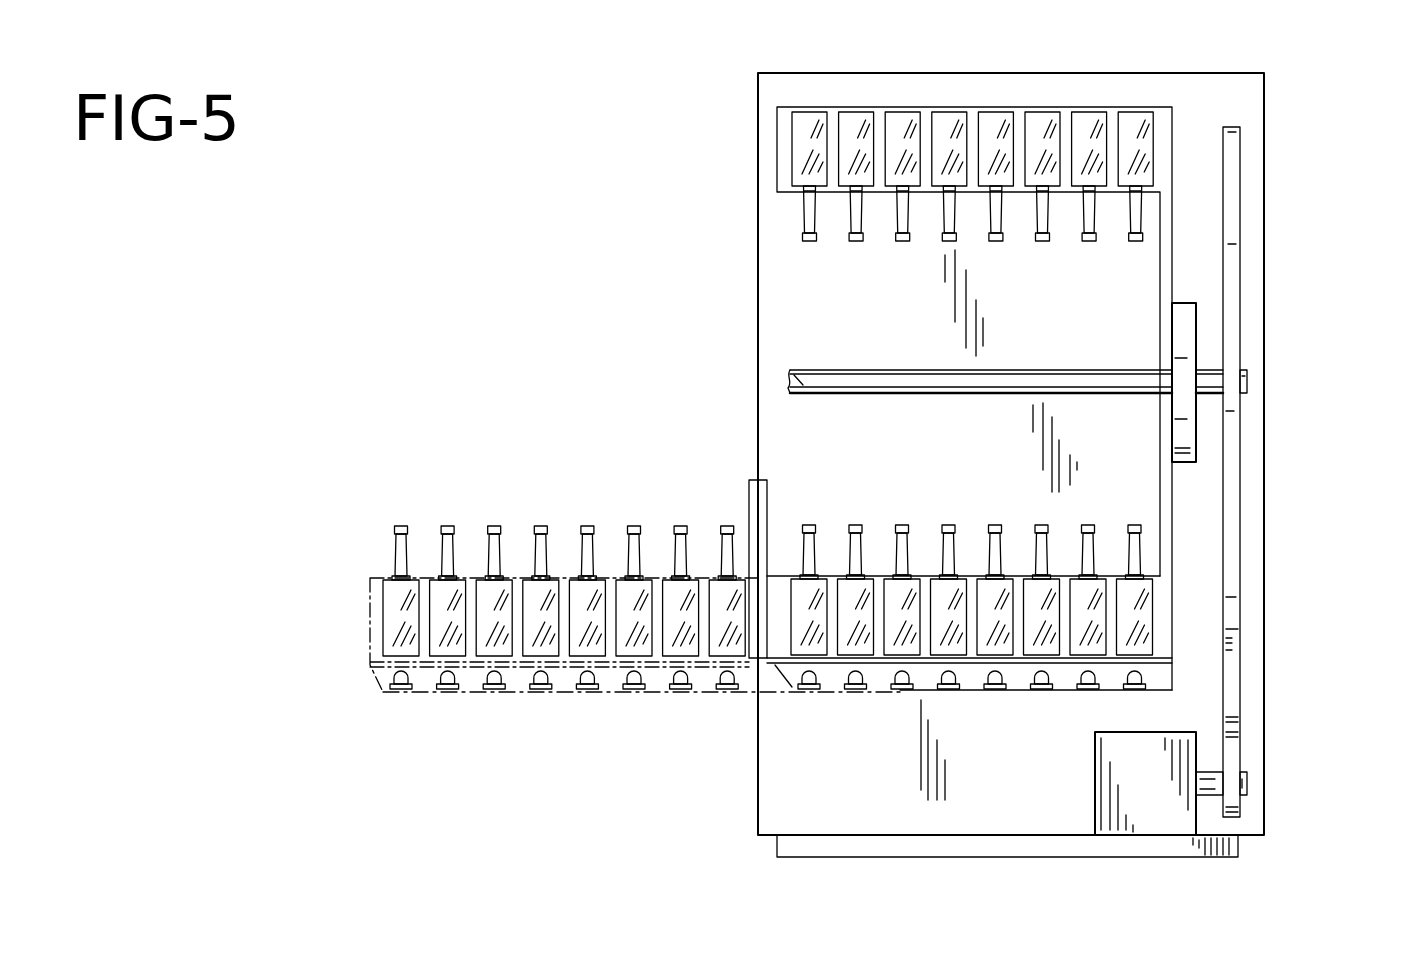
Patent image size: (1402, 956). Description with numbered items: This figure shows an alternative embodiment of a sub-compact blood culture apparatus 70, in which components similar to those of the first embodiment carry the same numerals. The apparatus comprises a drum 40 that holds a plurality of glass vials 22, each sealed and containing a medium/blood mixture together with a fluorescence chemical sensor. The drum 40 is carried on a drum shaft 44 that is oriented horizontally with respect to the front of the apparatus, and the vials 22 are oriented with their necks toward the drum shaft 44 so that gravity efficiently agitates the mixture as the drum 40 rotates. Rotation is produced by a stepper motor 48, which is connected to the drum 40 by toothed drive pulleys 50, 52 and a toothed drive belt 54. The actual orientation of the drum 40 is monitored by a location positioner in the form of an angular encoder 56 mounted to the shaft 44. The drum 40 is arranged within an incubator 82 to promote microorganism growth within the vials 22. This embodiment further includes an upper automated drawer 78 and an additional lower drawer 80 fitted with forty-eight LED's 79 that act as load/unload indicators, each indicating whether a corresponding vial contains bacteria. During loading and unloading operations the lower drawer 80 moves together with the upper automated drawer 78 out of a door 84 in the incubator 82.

The blood culture apparatus 70 is at (745, 96).
The drum 40 is at (1174, 203).
The incubator 82 is at (795, 285).
The glass vial 22 is at (1140, 602).
The drum shaft 44 is at (797, 372).
The door 84 is at (748, 490).
The upper automated drawer 78 is at (370, 578).
The LED 79 is at (797, 692).
The lower drawer 80 is at (830, 692).
The angular encoder 56 is at (1183, 323).
The toothed drive pulley 52 is at (1233, 345).
The toothed drive belt 54 is at (1225, 705).
The toothed drive pulley 50 is at (1232, 753).
The stepper motor 48 is at (1153, 812).